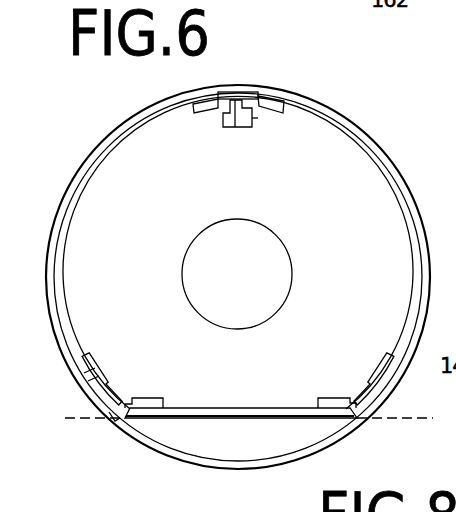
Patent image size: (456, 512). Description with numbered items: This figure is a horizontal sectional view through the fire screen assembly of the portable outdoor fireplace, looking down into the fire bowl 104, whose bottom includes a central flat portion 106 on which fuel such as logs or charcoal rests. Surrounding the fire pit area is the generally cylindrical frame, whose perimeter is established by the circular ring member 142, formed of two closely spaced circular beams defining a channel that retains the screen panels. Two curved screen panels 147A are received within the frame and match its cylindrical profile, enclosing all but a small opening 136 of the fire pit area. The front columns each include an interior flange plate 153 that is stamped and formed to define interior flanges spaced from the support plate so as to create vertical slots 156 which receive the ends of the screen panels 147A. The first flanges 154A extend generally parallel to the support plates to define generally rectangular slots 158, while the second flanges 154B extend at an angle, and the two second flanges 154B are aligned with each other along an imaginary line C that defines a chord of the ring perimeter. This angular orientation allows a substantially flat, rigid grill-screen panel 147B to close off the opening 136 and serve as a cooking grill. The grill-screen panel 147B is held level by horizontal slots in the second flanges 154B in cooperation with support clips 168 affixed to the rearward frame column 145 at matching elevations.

The upper circular ring member 142 is at (352, 123).
The screen panel 147A is at (386, 164).
The grill-screen panel 147B is at (300, 408).
The fire bowl 104 is at (253, 210).
The central flat portion 106 is at (252, 283).
The opening 136 is at (259, 421).
The imaginary line C is at (73, 421).
The interior flange plate 153 is at (198, 113).
The vertical slot 156 is at (227, 92).
The rectangular slot 158 is at (277, 100).
The rearward frame column 145 is at (236, 118).
The support clip 168 is at (257, 118).
The first flange 154A is at (104, 390).
The second flange 154B is at (323, 398).